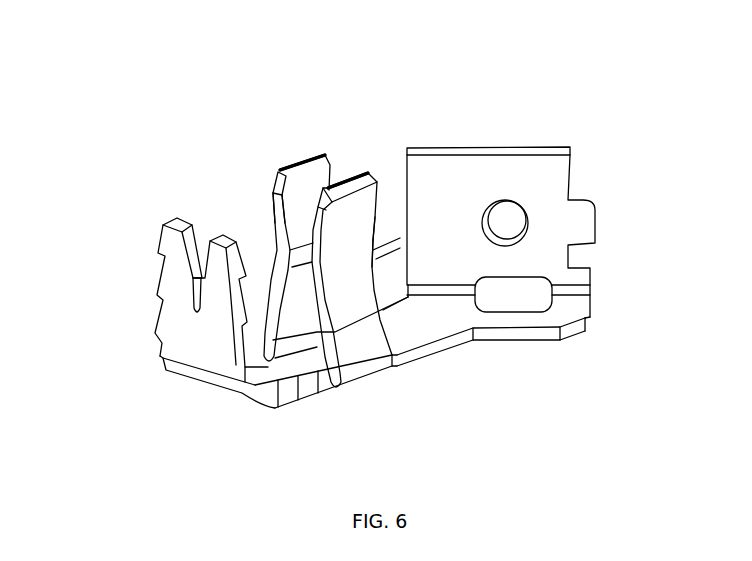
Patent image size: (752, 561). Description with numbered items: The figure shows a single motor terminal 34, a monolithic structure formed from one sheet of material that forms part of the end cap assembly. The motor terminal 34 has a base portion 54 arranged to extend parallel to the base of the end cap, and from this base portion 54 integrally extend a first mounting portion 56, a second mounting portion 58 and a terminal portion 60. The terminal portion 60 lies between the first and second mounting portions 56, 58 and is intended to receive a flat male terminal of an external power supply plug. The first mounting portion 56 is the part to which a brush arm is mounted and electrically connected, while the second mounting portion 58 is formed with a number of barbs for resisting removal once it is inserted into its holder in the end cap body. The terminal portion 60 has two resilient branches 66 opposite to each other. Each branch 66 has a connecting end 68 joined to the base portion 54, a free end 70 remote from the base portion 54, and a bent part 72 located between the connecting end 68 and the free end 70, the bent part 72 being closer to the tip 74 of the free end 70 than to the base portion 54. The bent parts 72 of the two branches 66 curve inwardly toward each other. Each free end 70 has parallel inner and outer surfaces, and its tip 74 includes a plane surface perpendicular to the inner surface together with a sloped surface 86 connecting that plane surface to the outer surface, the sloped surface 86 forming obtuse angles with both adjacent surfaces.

The motor terminal 34 is at (168, 106).
The base portion 54 is at (432, 320).
The first mounting portion 56 is at (542, 183).
The second mounting portion 58 is at (190, 331).
The terminal portion 60 is at (308, 155).
The resilient branches 66 is at (277, 229).
The connecting end 68 is at (355, 327).
The free end 70 is at (368, 218).
The bent part 72 is at (364, 254).
The tip 74 is at (348, 177).
The sloped surface 86 is at (275, 170).